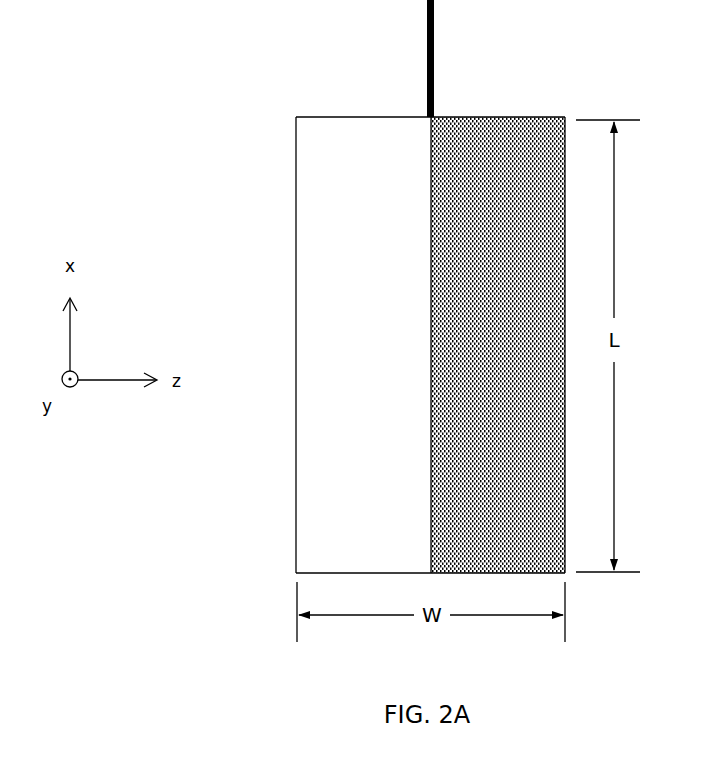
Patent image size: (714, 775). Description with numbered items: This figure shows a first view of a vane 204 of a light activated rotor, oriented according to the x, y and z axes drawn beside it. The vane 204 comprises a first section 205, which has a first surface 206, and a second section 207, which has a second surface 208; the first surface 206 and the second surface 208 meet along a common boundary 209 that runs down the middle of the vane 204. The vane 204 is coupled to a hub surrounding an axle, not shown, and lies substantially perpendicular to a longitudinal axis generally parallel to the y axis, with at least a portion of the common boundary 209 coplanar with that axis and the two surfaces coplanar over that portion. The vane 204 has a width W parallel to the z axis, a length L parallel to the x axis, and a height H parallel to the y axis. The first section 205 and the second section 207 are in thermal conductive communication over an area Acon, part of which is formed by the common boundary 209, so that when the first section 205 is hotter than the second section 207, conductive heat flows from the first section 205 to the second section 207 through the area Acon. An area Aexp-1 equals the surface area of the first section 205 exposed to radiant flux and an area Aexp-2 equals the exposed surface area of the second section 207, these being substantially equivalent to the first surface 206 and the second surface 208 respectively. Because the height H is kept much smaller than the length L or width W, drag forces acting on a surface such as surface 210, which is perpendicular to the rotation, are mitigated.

The vane 204 is at (226, 284).
The first section 205 is at (485, 148).
The first surface 206 is at (460, 142).
The second section 207 is at (367, 147).
The second surface 208 is at (399, 142).
The common boundary 209 is at (430, 313).
The surface 210 is at (295, 442).
The area of thermal conductive communication Acon is at (430, 407).
The exposed area of first section Aexp-1 is at (545, 182).
The exposed area of second section Aexp-2 is at (317, 182).